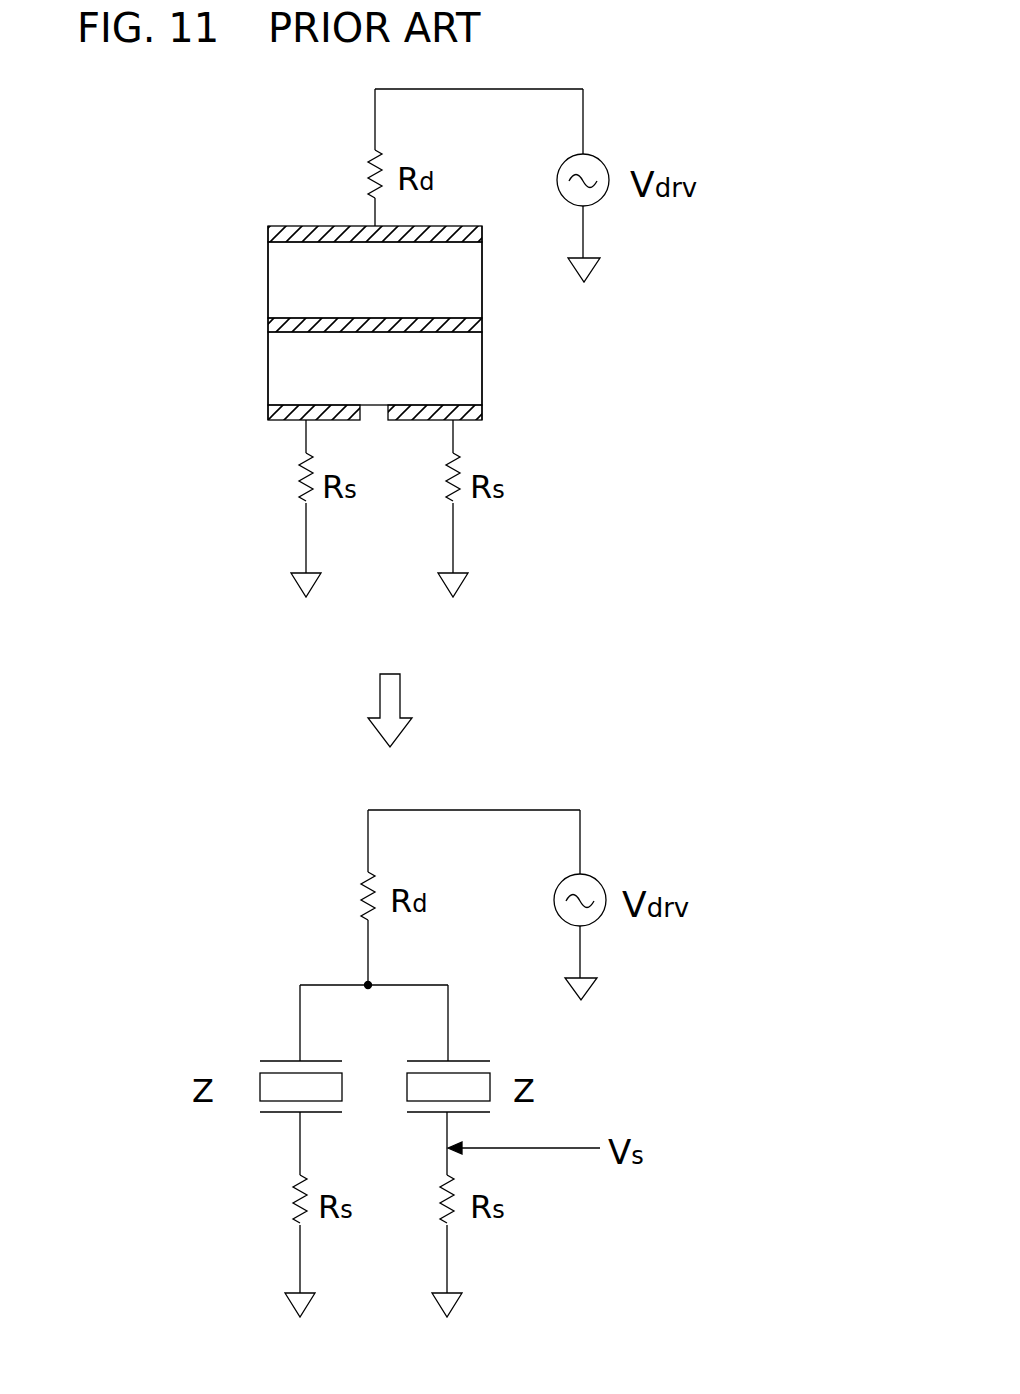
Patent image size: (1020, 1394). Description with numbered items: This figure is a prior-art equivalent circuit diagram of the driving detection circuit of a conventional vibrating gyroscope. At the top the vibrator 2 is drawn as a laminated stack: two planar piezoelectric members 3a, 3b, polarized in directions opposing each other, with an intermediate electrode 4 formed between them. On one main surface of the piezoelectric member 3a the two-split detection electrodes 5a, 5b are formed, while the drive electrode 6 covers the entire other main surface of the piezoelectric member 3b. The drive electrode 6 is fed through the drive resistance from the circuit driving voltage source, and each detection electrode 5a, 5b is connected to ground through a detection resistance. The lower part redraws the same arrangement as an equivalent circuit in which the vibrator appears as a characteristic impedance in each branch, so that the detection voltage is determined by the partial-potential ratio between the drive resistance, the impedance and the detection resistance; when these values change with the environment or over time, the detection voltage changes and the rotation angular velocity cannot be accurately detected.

The vibrator 2 is at (252, 240).
The piezoelectric member 3a is at (275, 365).
The piezoelectric member 3b is at (280, 276).
The intermediate electrode 4 is at (462, 329).
The detection electrode 5a is at (462, 421).
The detection electrode 5b is at (283, 421).
The drive electrode 6 is at (290, 228).